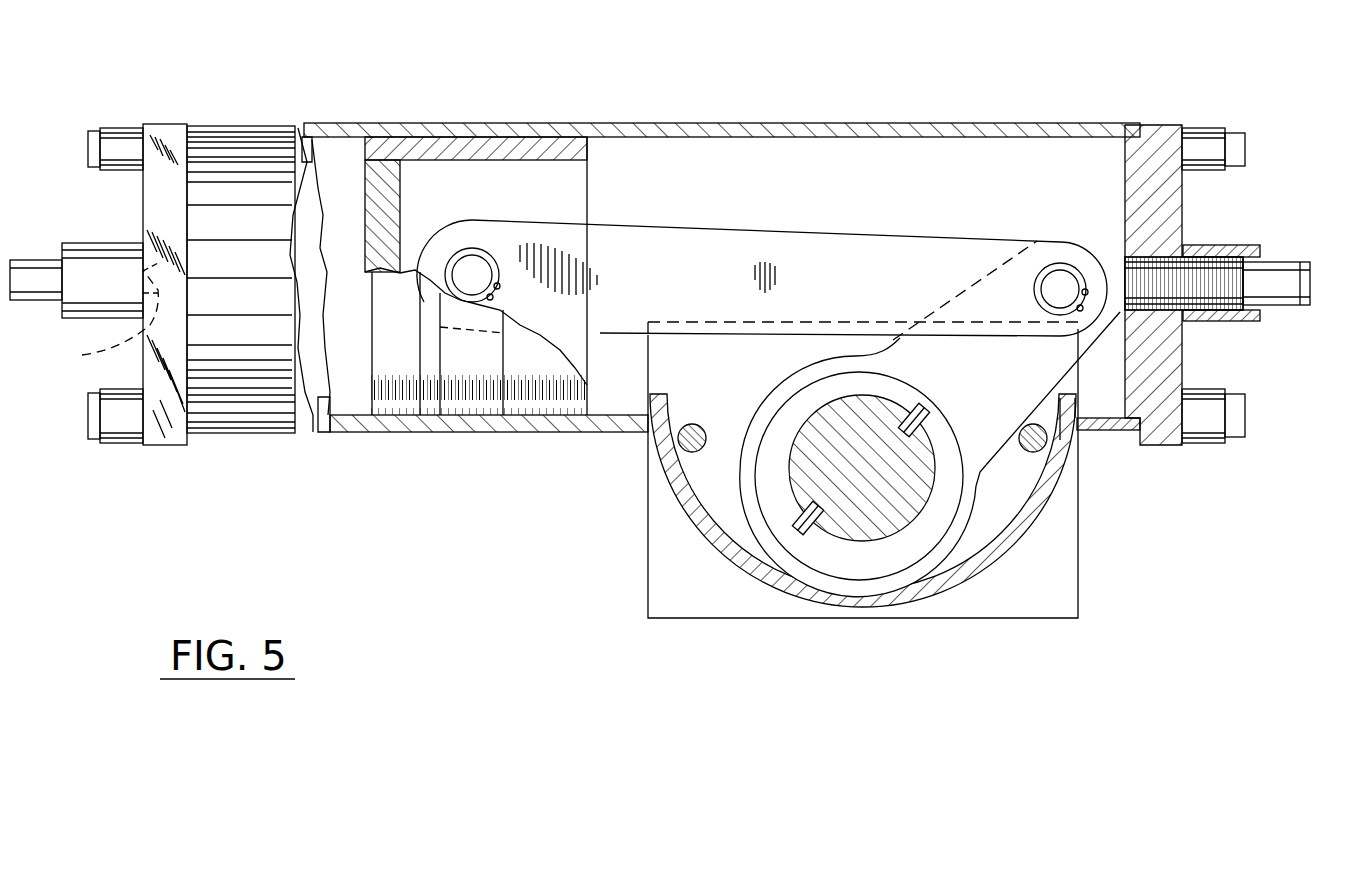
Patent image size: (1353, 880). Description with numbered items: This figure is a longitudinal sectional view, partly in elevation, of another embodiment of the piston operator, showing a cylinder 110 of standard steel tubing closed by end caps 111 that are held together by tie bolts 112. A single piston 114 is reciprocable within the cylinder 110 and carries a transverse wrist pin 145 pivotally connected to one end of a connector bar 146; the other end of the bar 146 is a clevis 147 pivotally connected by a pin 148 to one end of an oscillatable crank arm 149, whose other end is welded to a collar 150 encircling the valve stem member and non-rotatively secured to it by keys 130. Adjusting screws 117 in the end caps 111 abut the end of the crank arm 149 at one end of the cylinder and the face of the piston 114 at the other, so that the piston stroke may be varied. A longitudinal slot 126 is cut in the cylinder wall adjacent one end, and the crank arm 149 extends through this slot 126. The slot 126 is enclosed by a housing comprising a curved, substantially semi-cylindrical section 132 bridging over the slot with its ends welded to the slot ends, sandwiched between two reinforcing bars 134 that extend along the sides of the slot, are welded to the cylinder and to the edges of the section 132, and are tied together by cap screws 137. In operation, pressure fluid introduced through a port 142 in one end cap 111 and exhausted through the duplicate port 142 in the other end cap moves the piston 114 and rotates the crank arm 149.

The cylinder 110 is at (736, 112).
The end caps 111 is at (157, 440).
The tie bolts 112 is at (262, 136).
The piston 114 is at (478, 143).
The adjusting screws 117 is at (50, 278).
The longitudinal slot 126 is at (1077, 434).
The keys 130 is at (930, 420).
The curved semi-cylindrical section 132 is at (987, 557).
The reinforcing bars 134 is at (684, 598).
The cap screws 137 is at (688, 444).
The port 142 is at (97, 316).
The wrist pin 145 is at (482, 268).
The connector bar 146 is at (690, 248).
The clevis 147 is at (975, 245).
The pin 148 is at (1062, 280).
The crank arm 149 is at (1050, 365).
The collar 150 is at (907, 388).